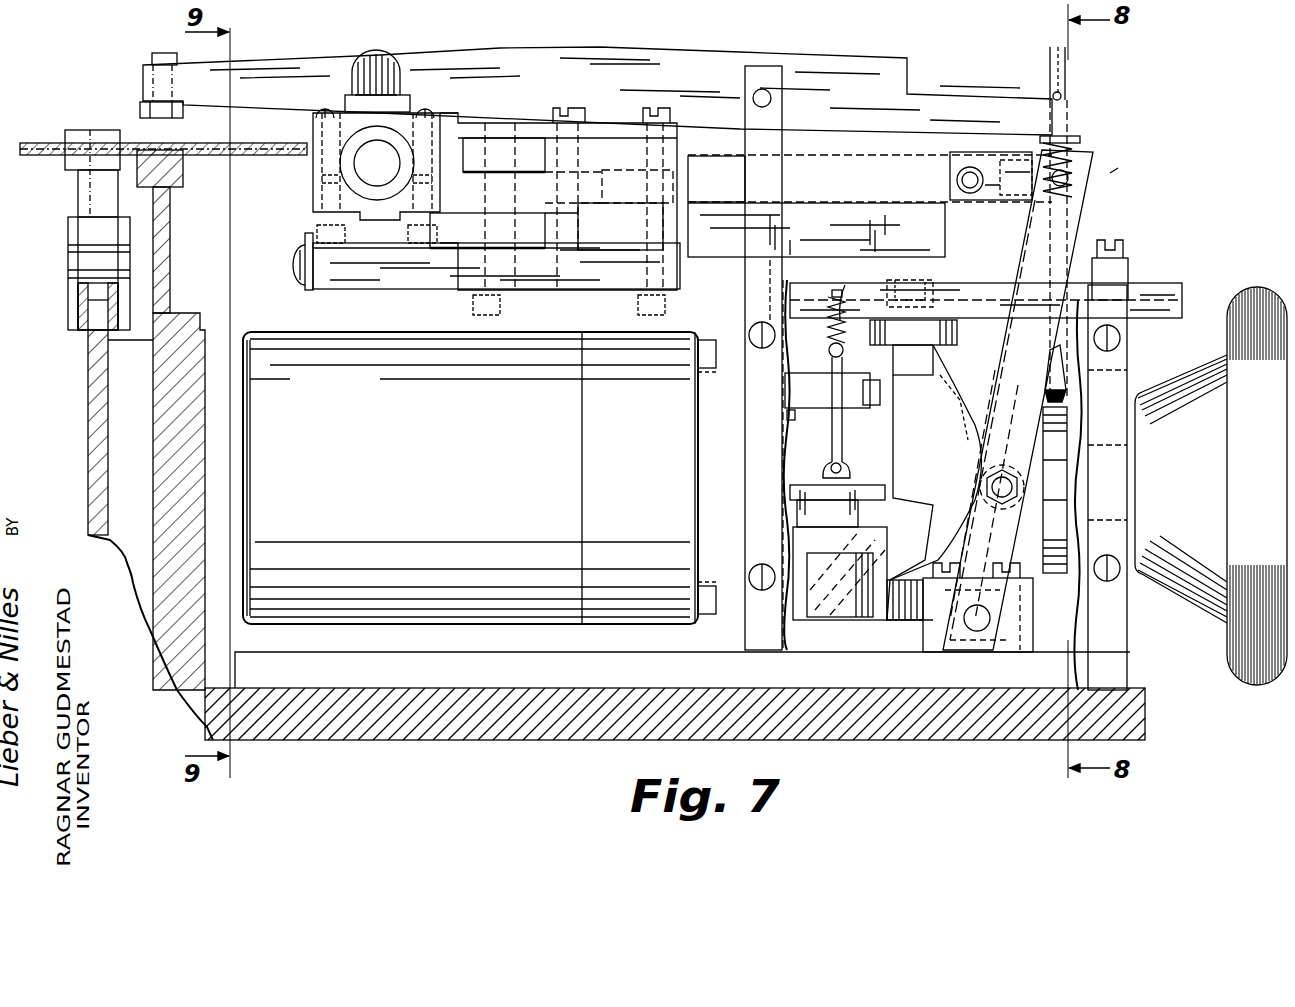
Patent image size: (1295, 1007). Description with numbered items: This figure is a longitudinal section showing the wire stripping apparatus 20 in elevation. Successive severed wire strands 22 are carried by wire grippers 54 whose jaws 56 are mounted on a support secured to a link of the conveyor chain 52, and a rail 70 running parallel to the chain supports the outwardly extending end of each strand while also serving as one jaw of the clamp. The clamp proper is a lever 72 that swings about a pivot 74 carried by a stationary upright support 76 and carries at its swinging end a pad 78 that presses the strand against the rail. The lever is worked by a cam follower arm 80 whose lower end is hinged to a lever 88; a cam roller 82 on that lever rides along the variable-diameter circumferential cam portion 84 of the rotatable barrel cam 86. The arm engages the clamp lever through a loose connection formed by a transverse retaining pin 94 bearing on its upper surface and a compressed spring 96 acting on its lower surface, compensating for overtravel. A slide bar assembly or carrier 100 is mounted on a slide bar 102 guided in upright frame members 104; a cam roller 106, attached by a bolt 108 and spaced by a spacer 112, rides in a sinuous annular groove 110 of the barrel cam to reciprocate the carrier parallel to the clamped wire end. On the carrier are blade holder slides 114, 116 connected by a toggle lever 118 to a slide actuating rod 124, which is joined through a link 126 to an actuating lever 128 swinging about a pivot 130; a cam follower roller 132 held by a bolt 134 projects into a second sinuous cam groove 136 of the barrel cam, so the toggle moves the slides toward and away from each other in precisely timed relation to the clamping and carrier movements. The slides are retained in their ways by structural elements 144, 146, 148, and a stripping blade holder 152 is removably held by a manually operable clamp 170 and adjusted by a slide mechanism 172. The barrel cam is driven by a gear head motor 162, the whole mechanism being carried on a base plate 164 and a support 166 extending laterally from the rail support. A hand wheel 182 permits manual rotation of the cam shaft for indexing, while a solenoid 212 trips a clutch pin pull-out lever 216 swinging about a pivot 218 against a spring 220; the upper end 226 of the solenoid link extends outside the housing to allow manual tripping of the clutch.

The wire stripping apparatus 20 is at (1120, 167).
The wire strand 22 is at (38, 143).
The conveyor chain 52 is at (78, 313).
The wire gripper 54 is at (68, 215).
The jaws 56 is at (78, 130).
The rail 70 is at (178, 172).
The lever 72 is at (545, 55).
The pivot 74 is at (771, 98).
The stationary upright support 76 is at (782, 142).
The pad 78 is at (138, 108).
The arm 80 is at (1068, 78).
The cam roller 82 is at (1066, 397).
The circumferential cam portion 84 is at (1068, 422).
The barrel cam 86 is at (940, 462).
The lever 88 is at (1112, 385).
The transverse retaining pin 94 is at (1064, 97).
The spring 96 is at (1080, 175).
The carrier 100 is at (363, 296).
The slide bar 102 is at (1165, 298).
The upright frame members 104 is at (1128, 265).
The cam roller 106 is at (913, 347).
The bolt 108 is at (908, 288).
The sinuous annular groove 110 is at (897, 435).
The spacer 112 is at (848, 290).
The blade holder slide 114 is at (488, 162).
The blade holder slide 116 is at (445, 244).
The toggle lever 118 is at (586, 205).
The slide actuating rod 124 is at (712, 170).
The link 126 is at (1002, 196).
The actuating lever 128 is at (1073, 222).
The pivot 130 is at (976, 626).
The cam follower roller 132 is at (1000, 470).
The bolt 134 is at (1000, 500).
The sinuous cam groove 136 is at (970, 398).
The structural element 144 is at (305, 245).
The structural element 146 is at (495, 128).
The structural element 148 is at (545, 204).
The stripping blade holder 152 is at (302, 124).
The gear head motor 162 is at (475, 442).
The base plate 164 is at (616, 674).
The support 166 is at (560, 735).
The manually operable clamp 170 is at (348, 95).
The slide mechanism 172 is at (438, 132).
The hand wheel 182 is at (1255, 288).
The solenoid 212 is at (873, 545).
The pin pull-out lever 216 is at (789, 417).
The pivot 218 is at (876, 405).
The spring 220 is at (828, 330).
The upper end 226 is at (829, 351).